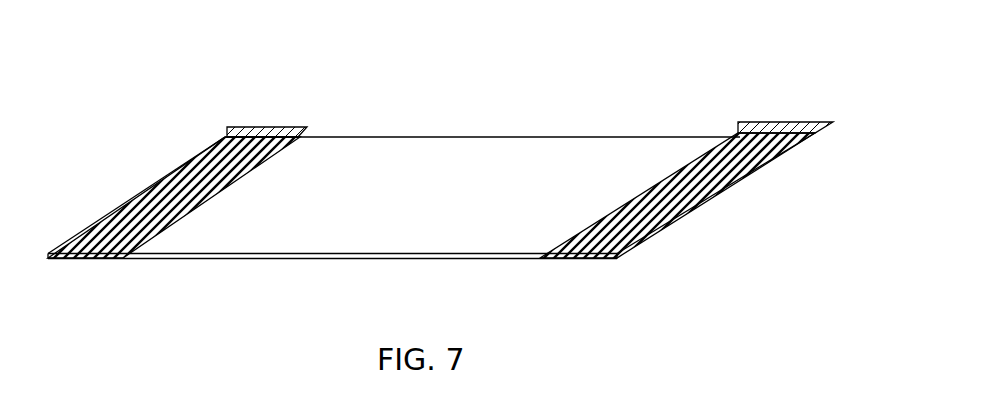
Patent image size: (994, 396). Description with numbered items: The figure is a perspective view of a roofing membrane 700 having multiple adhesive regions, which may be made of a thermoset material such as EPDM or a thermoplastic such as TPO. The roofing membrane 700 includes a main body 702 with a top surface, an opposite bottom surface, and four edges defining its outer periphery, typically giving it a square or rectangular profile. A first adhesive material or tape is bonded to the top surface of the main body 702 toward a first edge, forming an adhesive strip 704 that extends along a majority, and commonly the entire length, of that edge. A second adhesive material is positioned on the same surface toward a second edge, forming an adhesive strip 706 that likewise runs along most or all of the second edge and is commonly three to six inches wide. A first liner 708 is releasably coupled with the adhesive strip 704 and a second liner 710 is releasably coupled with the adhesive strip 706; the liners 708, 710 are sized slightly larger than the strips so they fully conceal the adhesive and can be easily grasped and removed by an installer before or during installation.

The roofing membrane 700 is at (868, 162).
The main body 702 is at (327, 220).
The adhesive strip 704 is at (228, 140).
The adhesive strip 706 is at (645, 227).
The first liner 708 is at (243, 133).
The second liner 710 is at (778, 127).